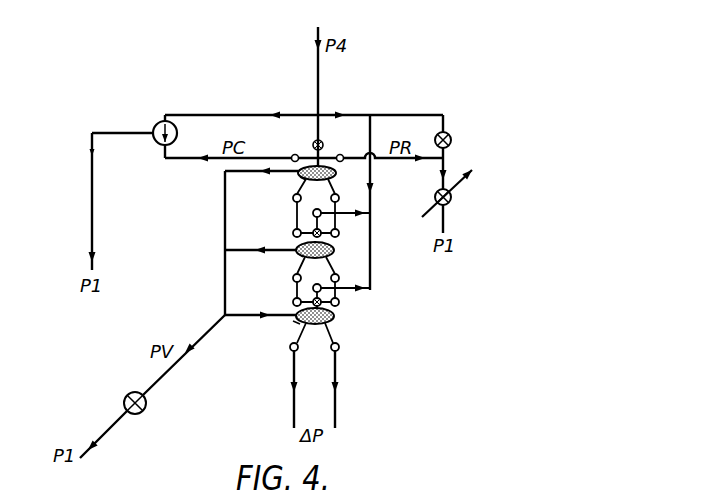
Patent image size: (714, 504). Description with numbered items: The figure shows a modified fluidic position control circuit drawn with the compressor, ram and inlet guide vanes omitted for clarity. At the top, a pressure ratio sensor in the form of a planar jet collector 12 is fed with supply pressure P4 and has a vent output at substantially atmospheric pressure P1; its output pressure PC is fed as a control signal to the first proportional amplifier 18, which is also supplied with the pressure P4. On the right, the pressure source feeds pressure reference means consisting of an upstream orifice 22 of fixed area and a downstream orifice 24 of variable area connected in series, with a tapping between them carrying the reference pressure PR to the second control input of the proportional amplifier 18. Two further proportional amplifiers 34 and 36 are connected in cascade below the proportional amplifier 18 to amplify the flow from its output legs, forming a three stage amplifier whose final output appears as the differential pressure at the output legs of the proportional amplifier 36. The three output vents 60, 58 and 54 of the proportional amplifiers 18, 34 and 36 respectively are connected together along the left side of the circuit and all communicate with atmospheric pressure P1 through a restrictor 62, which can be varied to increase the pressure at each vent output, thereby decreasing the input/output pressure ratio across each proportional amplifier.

The planar jet collector 12 is at (157, 124).
The proportional amplifier 18 is at (347, 175).
The upstream orifice 22 is at (452, 133).
The downstream orifice 24 is at (453, 200).
The proportional amplifier 34 is at (345, 253).
The proportional amplifier 36 is at (338, 318).
The output vent 54 is at (293, 321).
The output vent 58 is at (297, 253).
The output vent 60 is at (300, 177).
The restrictor 62 is at (126, 396).